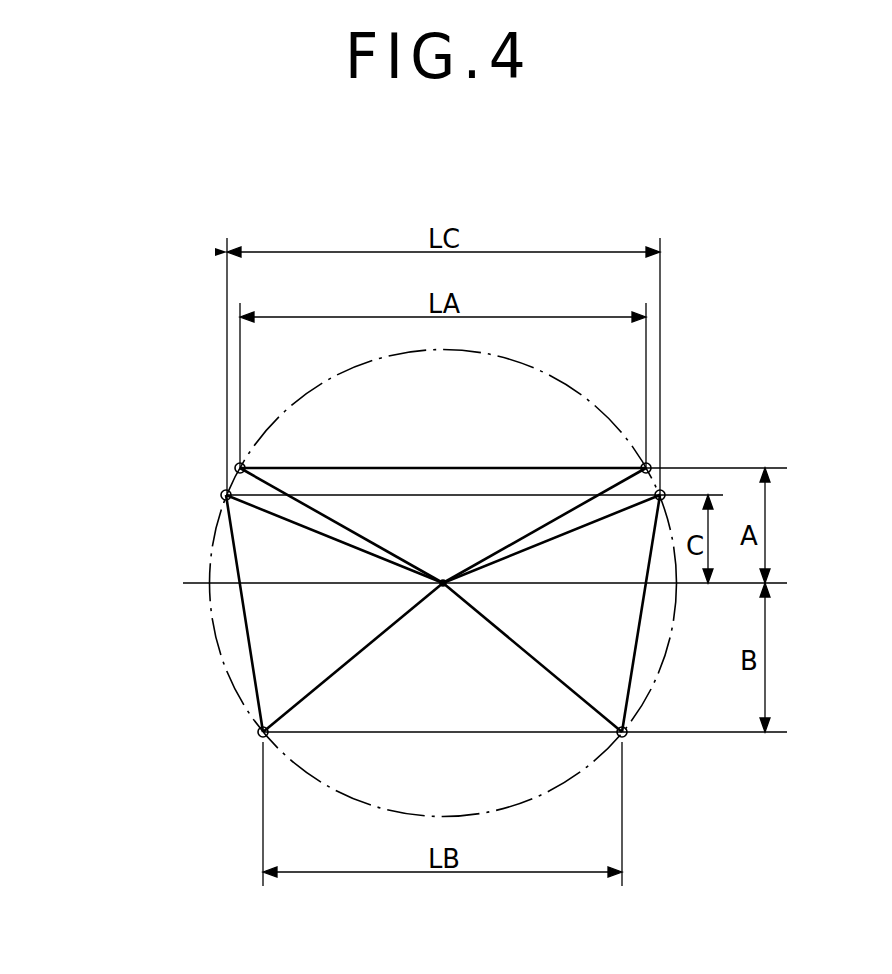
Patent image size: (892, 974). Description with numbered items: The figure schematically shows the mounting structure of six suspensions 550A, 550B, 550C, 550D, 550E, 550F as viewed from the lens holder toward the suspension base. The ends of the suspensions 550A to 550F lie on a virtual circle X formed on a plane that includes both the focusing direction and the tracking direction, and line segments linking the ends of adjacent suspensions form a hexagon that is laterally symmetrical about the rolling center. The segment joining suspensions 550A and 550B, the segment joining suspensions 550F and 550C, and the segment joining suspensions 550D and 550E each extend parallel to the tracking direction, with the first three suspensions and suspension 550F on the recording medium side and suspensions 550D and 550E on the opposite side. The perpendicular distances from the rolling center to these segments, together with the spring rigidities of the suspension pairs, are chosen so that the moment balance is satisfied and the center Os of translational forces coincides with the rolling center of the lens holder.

The suspension 550A is at (235, 468).
The suspension 550B is at (642, 466).
The suspension 550C is at (661, 491).
The suspension 550D is at (624, 737).
The suspension 550E is at (260, 736).
The suspension 550F is at (222, 496).
The virtual circle X is at (220, 672).
The center of translational forces Os is at (443, 587).